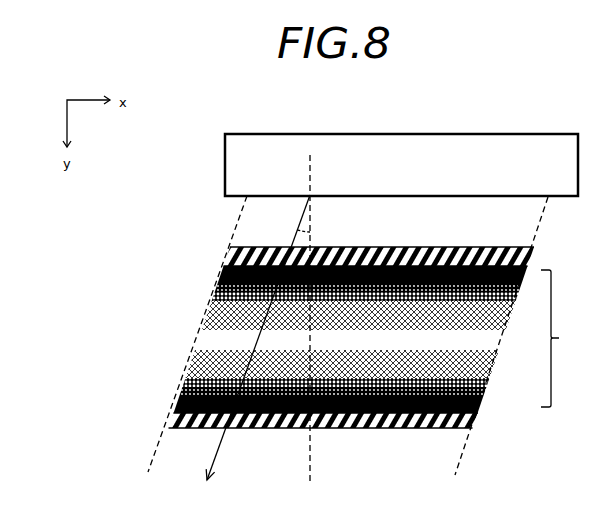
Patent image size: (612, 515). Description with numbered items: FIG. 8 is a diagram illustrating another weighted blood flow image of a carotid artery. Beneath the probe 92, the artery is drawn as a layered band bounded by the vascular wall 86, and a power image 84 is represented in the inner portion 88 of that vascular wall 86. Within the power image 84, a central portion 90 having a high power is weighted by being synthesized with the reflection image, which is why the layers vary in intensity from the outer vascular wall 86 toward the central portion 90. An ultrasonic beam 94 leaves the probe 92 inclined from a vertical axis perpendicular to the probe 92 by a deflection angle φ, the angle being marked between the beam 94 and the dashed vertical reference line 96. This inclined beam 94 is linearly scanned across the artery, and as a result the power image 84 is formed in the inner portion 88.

The power image 84 is at (212, 268).
The vascular wall 86 is at (494, 248).
The inner portion 88 is at (566, 338).
The central portion 90 is at (200, 340).
The probe 92 is at (413, 134).
The ultrasonic beam 94 is at (222, 443).
The normal reference line 96 is at (313, 447).